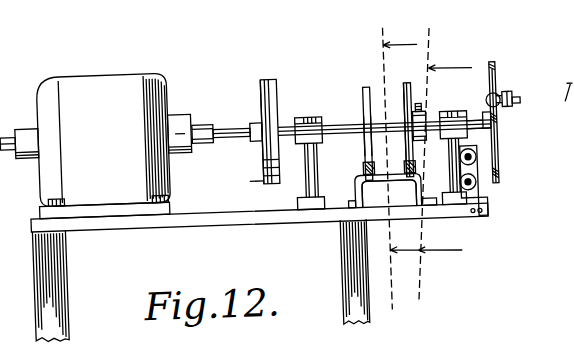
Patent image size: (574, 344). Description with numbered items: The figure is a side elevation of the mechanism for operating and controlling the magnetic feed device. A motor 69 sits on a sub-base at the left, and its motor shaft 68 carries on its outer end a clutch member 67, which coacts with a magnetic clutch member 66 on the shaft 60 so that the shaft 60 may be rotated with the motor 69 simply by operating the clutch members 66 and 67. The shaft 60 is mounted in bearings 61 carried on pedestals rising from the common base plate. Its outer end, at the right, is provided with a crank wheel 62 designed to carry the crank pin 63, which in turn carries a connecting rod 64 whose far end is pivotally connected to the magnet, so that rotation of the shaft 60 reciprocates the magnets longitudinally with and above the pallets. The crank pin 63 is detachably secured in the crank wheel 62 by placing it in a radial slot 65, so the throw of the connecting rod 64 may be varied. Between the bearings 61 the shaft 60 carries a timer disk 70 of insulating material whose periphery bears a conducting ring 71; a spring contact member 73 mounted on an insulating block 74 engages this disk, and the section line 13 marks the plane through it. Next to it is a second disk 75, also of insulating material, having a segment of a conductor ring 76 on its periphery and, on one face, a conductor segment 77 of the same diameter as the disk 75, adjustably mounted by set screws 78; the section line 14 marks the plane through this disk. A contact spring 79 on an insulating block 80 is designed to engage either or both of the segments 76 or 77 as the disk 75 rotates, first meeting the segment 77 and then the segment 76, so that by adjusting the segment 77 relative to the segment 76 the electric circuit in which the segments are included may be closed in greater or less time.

The section line 13- 13 is at (400, 166).
The section line 14- 14 is at (441, 158).
The shaft 60 is at (342, 130).
The bearings 61 is at (318, 119).
The crank wheel 62 is at (500, 70).
The crank pin 63 is at (523, 108).
The connecting rod 64 is at (513, 112).
The radial slot 65 is at (507, 89).
The magnetic clutch member 66 is at (280, 85).
The clutch member 67 is at (263, 95).
The motor shaft 68 is at (234, 139).
The motor 69 is at (96, 140).
The timer disk 70 is at (362, 154).
The conducting ring 71 is at (368, 91).
The spring contact member 73 is at (362, 176).
The insulating block 74 is at (392, 190).
The second disk 75 is at (405, 117).
The conductor ring segment 76 is at (406, 92).
The conductor segment 77 is at (416, 97).
The set screws 78 is at (419, 109).
The contact spring 79 is at (412, 175).
The insulating block 80 is at (389, 194).